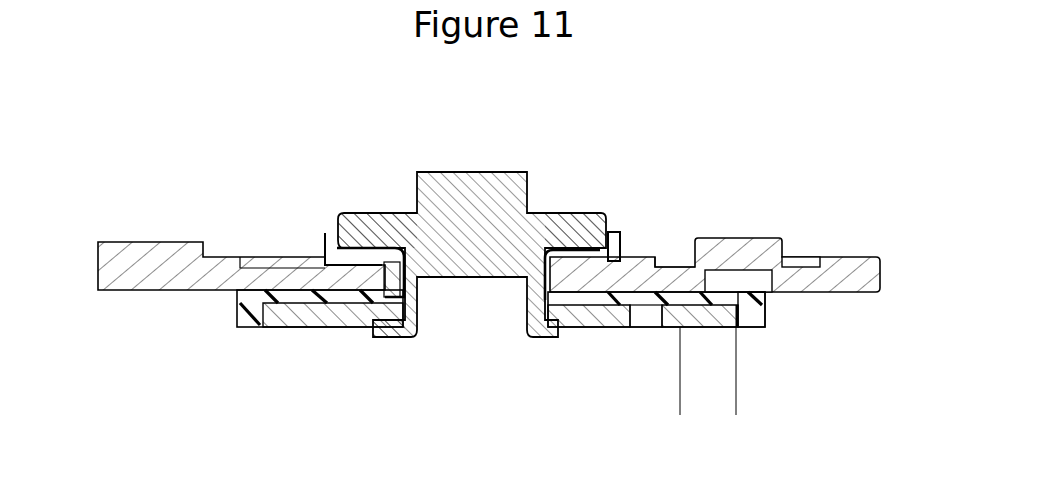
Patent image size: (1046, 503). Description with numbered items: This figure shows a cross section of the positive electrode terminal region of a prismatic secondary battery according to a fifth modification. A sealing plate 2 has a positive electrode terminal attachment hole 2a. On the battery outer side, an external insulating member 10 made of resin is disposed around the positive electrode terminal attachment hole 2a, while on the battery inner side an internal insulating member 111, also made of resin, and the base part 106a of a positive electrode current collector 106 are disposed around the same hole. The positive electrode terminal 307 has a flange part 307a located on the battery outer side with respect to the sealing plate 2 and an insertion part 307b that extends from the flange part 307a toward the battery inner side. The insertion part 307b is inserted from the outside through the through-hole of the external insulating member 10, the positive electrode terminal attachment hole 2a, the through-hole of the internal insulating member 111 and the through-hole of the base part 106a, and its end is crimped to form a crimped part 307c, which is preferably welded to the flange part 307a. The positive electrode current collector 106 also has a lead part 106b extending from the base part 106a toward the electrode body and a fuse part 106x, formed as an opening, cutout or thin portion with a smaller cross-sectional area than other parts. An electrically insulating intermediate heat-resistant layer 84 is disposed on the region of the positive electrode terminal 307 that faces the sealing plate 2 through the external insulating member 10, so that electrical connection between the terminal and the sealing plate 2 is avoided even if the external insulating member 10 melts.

The sealing plate 2 is at (847, 275).
The positive electrode terminal attachment hole 2a is at (360, 298).
The external insulating member 10 is at (621, 232).
The intermediate heat-resistant layer 84 is at (388, 245).
The positive electrode current collector 106 is at (576, 369).
The base part 106a is at (315, 327).
The lead part 106b is at (707, 380).
The fuse part 106x is at (641, 320).
The internal insulating member 111 is at (300, 297).
The positive electrode terminal 307 is at (467, 272).
The flange part 307a is at (356, 213).
The insertion part 307b is at (420, 278).
The crimped part 307c is at (393, 337).